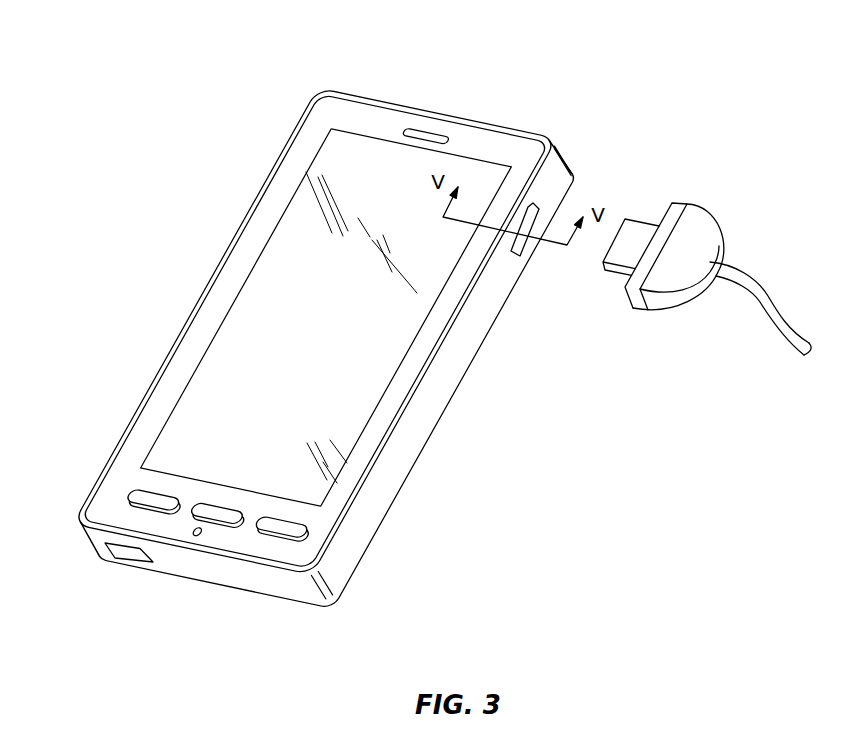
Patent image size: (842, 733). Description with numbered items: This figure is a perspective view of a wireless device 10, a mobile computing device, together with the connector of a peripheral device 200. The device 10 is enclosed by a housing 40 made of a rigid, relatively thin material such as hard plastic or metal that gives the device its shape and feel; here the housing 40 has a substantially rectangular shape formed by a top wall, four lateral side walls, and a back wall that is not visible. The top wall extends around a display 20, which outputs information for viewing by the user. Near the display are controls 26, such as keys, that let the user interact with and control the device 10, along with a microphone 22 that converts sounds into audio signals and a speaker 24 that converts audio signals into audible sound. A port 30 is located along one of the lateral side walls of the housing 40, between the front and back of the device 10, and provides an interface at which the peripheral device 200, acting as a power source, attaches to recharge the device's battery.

The wireless device 10 is at (583, 60).
The display 20 is at (287, 250).
The microphone 22 is at (130, 552).
The speaker 24 is at (417, 137).
The controls 26 is at (272, 520).
The port 30 is at (533, 217).
The housing 40 is at (322, 522).
The peripheral device 200 is at (637, 233).